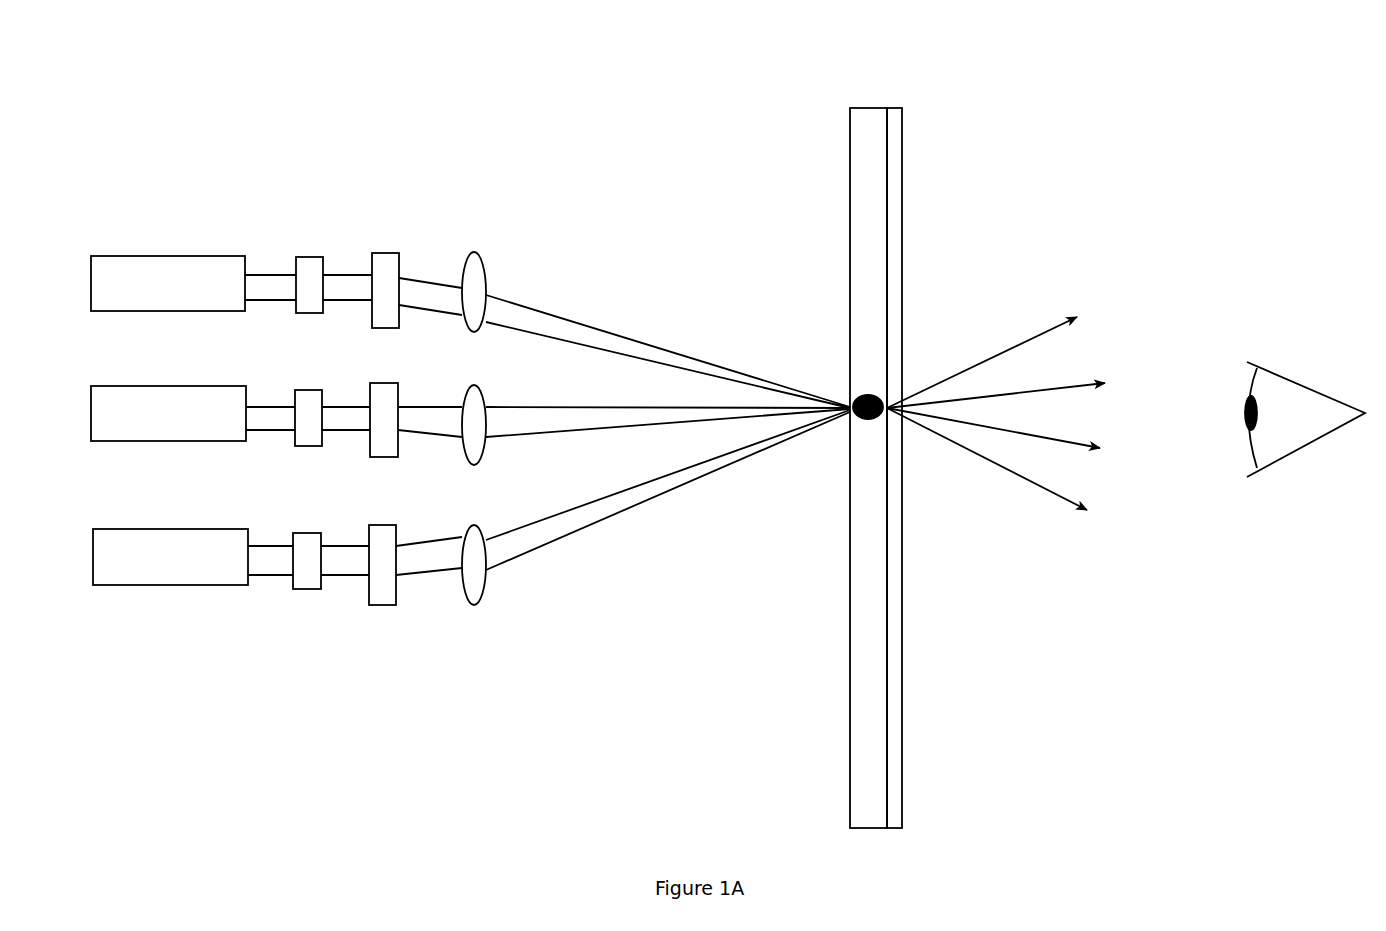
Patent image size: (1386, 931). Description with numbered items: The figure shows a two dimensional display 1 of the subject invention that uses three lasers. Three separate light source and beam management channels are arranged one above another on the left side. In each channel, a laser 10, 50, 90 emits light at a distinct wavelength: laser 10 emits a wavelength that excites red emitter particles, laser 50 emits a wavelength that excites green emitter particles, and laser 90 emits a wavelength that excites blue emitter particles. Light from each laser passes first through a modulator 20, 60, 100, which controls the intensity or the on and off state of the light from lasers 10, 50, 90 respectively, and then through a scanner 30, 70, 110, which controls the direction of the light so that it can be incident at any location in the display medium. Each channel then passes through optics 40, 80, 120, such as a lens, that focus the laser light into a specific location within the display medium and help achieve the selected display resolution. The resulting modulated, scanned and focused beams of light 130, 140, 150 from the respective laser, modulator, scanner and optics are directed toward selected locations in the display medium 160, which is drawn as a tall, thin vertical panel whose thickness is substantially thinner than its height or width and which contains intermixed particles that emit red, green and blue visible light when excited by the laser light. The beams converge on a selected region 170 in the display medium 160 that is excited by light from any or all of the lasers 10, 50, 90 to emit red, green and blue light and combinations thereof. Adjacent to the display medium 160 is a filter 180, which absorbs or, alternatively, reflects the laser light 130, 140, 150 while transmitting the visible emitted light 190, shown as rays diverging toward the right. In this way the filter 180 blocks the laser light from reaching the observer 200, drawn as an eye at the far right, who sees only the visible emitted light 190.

The two dimensional display 1 is at (628, 72).
The laser 10 is at (178, 263).
The modulator 20 is at (305, 263).
The scanner 30 is at (383, 260).
The optics 40 is at (470, 263).
The laser 50 is at (178, 393).
The modulator 60 is at (304, 396).
The scanner 70 is at (382, 391).
The optics 80 is at (470, 393).
The laser 90 is at (177, 536).
The modulator 100 is at (305, 540).
The scanner 110 is at (381, 530).
The optics 120 is at (469, 535).
The modulated, scanned and focused beam of light 130 is at (633, 345).
The modulated, scanned and focused beam of light 140 is at (617, 413).
The modulated, scanned and focused beam of light 150 is at (622, 505).
The display medium 160 is at (848, 235).
The selected region in display medium 170 is at (873, 446).
The filter 180 is at (903, 253).
The visible emitted light 190 is at (1011, 396).
The observer 200 is at (1292, 445).